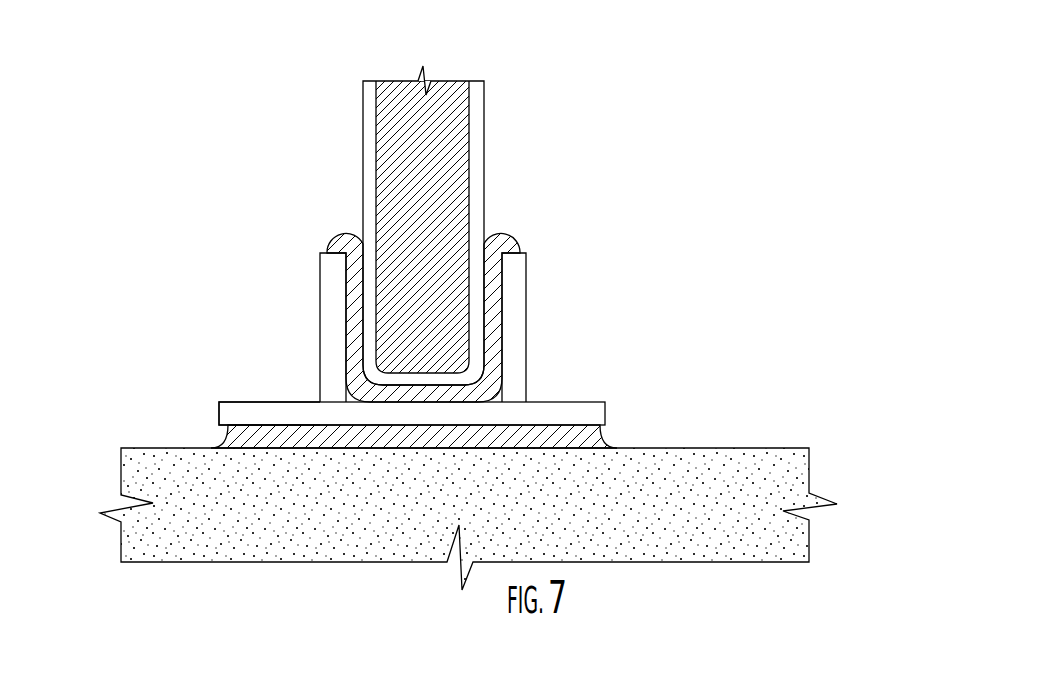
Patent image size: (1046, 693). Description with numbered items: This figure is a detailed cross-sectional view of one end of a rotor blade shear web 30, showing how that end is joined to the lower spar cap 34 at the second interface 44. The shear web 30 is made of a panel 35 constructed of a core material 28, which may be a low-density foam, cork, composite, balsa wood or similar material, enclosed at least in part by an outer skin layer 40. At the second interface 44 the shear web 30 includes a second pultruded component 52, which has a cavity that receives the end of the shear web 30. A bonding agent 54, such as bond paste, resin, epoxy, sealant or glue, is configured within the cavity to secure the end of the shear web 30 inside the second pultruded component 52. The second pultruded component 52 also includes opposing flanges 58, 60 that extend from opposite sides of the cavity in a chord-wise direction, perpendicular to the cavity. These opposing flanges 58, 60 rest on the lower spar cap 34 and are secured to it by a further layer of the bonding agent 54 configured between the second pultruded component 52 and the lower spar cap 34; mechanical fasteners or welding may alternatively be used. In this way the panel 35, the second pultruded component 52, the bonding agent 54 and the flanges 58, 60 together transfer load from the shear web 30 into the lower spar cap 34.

The core material 28 is at (354, 227).
The shear web 30 is at (401, 225).
The lower spar cap 34 is at (718, 447).
The panel 35 is at (399, 161).
The outer skin layer 40 is at (485, 121).
The second interface 44 is at (621, 184).
The second pultruded component 52 is at (528, 327).
The bonding agent 54 is at (499, 225).
The flange 58 is at (580, 409).
The opposing flange 60 is at (251, 410).